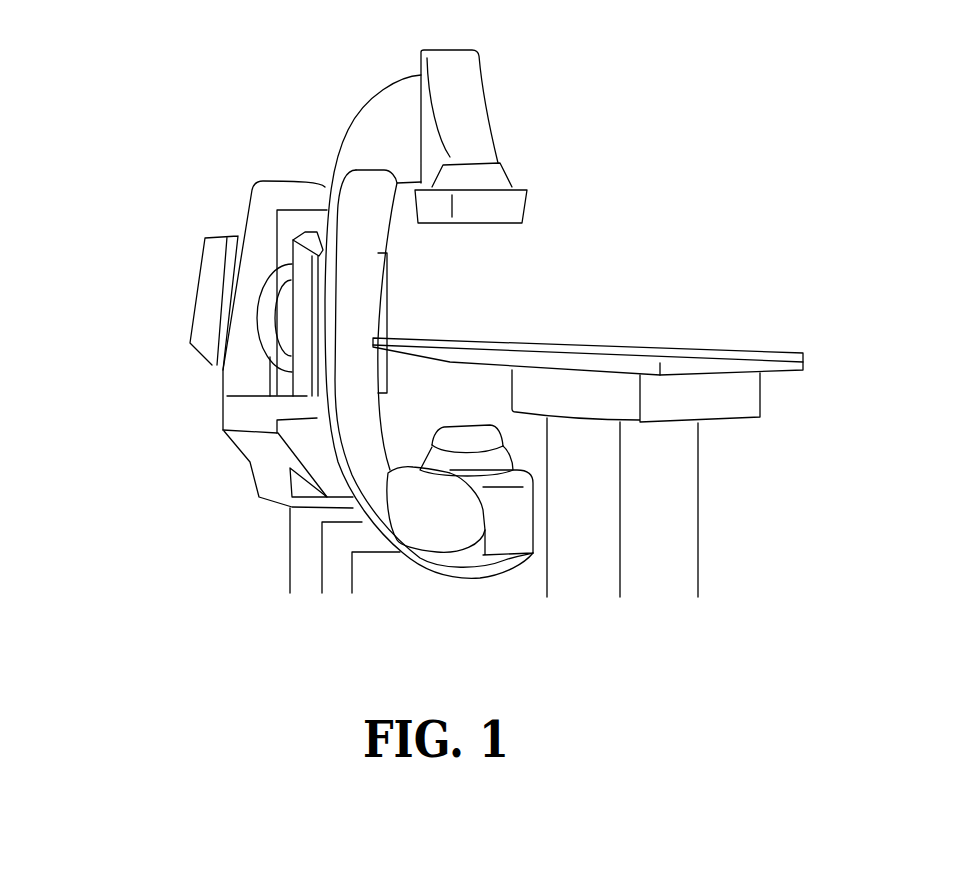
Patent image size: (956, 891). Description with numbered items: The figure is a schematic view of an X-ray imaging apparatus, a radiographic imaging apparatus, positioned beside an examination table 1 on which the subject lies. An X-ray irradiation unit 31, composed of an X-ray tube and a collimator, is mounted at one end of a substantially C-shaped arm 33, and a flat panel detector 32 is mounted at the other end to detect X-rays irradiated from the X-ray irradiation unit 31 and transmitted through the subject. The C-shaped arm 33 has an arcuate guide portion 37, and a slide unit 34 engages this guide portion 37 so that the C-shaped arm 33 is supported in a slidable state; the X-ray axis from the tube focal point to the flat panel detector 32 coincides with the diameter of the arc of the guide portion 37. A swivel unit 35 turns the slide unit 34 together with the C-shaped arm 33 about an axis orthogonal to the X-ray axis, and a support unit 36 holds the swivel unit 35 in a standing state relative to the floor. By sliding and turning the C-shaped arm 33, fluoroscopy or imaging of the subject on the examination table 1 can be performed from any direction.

The examination table 1 is at (647, 325).
The X-ray irradiation unit 31 is at (472, 437).
The flat panel detector 32 is at (505, 207).
The C-shaped arm 33 is at (387, 115).
The slide unit 34 is at (300, 327).
The swivel unit 35 is at (267, 303).
The support unit 36 is at (248, 267).
The guide portion 37 is at (337, 455).